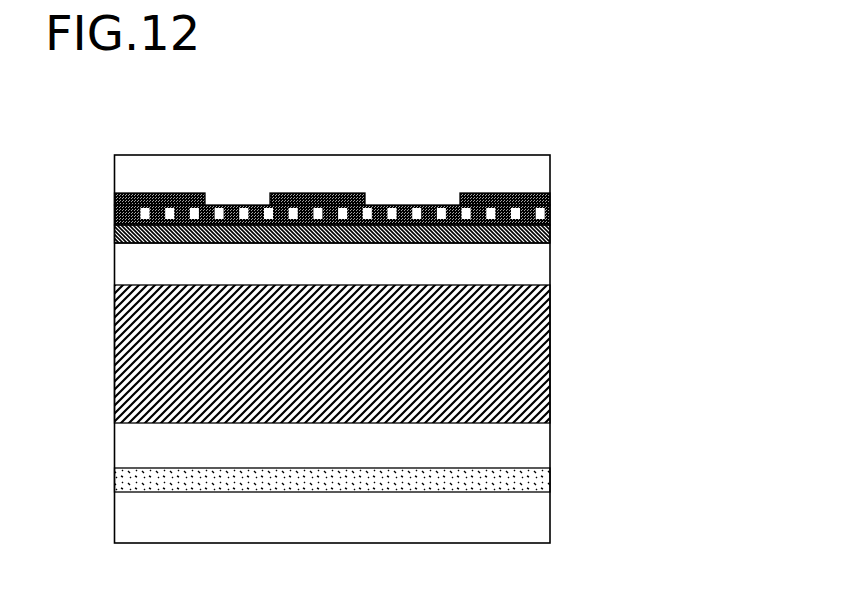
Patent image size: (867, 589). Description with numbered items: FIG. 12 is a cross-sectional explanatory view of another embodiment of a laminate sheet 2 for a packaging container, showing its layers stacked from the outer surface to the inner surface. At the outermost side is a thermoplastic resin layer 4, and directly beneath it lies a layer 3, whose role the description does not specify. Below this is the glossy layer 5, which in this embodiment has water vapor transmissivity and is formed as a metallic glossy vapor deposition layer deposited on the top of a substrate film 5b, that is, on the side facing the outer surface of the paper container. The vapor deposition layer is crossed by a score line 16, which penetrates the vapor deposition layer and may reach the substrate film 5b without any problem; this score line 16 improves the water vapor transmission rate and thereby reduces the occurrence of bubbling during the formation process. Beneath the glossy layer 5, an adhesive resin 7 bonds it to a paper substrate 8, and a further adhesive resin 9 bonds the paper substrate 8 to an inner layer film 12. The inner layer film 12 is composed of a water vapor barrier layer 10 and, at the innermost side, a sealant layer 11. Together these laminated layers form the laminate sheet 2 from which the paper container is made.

The laminate sheet 2 is at (112, 151).
The upper electrode 3 is at (552, 175).
The thermoplastic resin layer 4 is at (524, 173).
The glossy layer 5 is at (552, 215).
The substrate film 5b is at (552, 232).
The adhesive resin 7 is at (527, 266).
The paper substrate 8 is at (552, 348).
The adhesive resin 9 is at (515, 443).
The water vapor barrier layer 10 is at (552, 477).
The sealant layer 11 is at (527, 525).
The inner layer film 12 is at (716, 492).
The score line 16 is at (552, 208).